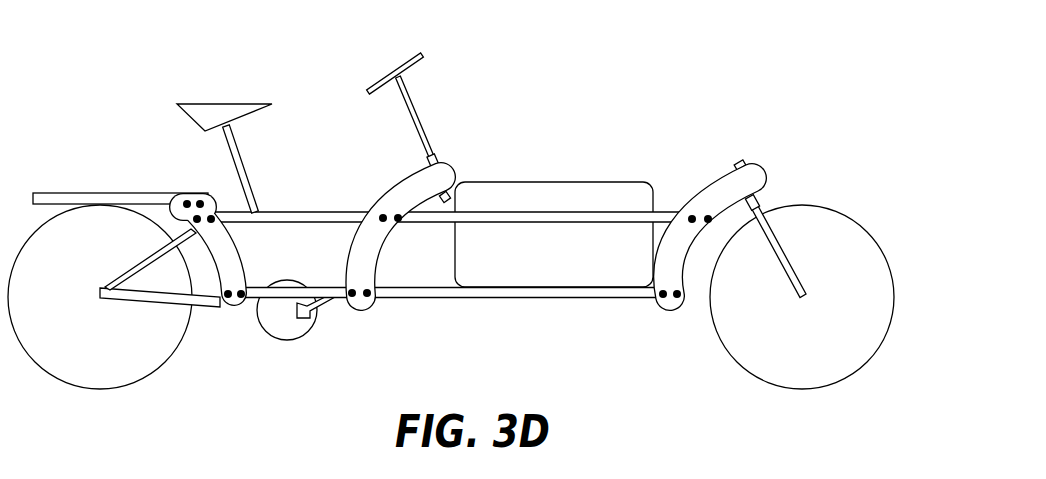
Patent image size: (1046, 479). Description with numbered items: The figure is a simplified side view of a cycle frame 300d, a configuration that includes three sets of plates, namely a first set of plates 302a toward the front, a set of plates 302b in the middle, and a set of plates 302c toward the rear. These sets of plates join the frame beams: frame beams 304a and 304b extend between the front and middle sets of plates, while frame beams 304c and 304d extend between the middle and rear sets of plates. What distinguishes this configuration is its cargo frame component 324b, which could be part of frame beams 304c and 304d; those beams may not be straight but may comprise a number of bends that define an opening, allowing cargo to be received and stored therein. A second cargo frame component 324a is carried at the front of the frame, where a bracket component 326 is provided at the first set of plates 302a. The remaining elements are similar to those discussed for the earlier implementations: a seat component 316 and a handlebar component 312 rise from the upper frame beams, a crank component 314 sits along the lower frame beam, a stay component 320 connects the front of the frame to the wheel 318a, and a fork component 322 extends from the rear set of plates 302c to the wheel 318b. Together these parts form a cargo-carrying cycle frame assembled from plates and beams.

The cycle frame 300d is at (757, 84).
The first set of plates 302a is at (200, 259).
The set of plates 302b is at (391, 197).
The set of plates 302c is at (707, 190).
The frame beam 304a is at (322, 287).
The frame beam 304b is at (309, 212).
The frame beam 304c is at (417, 298).
The frame beam 304d is at (437, 222).
The handlebar component 312 is at (412, 103).
The crank component 314 is at (316, 325).
The seat component 316 is at (238, 104).
The wheel 318a is at (115, 258).
The wheel 318b is at (849, 216).
The stay component 320 is at (110, 298).
The fork component 322 is at (781, 271).
The cargo frame component 324a is at (105, 193).
The cargo frame component 324b is at (532, 286).
The bracket component 326 is at (191, 194).